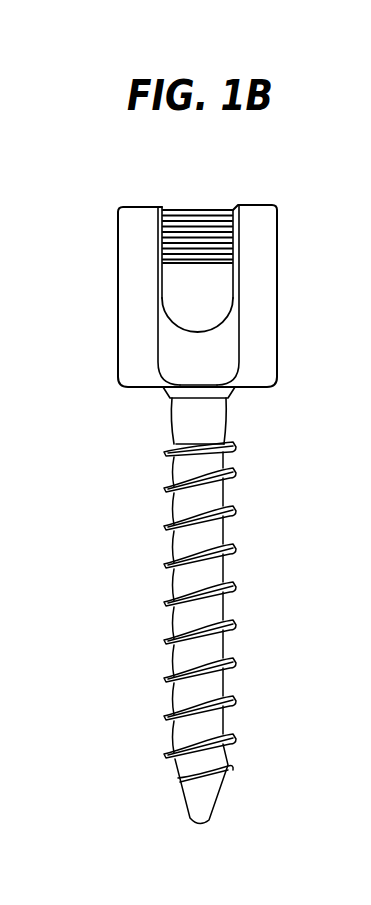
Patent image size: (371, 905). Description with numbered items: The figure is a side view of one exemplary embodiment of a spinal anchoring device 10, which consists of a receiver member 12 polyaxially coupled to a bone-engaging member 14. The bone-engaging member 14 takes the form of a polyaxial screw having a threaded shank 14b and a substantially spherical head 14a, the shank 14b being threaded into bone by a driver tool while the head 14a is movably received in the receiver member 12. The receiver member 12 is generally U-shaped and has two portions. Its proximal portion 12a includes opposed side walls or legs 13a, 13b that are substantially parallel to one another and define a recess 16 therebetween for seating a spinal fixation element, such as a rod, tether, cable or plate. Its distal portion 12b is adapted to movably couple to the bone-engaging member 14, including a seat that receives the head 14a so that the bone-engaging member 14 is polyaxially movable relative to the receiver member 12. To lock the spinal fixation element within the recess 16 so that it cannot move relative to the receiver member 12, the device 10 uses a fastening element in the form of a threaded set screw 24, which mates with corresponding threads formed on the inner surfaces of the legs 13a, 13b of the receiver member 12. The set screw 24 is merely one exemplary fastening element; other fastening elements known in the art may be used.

The spinal anchoring device 10 is at (297, 185).
The receiver member 12 is at (287, 317).
The proximal portion 12a is at (108, 214).
The distal portion 12b is at (108, 323).
The leg 13a is at (137, 222).
The leg 13b is at (261, 242).
The recess 16 is at (200, 330).
The threaded set screw 24 is at (196, 207).
The bone-engaging member 14 is at (270, 503).
The head 14a is at (229, 394).
The threaded shank 14b is at (229, 567).